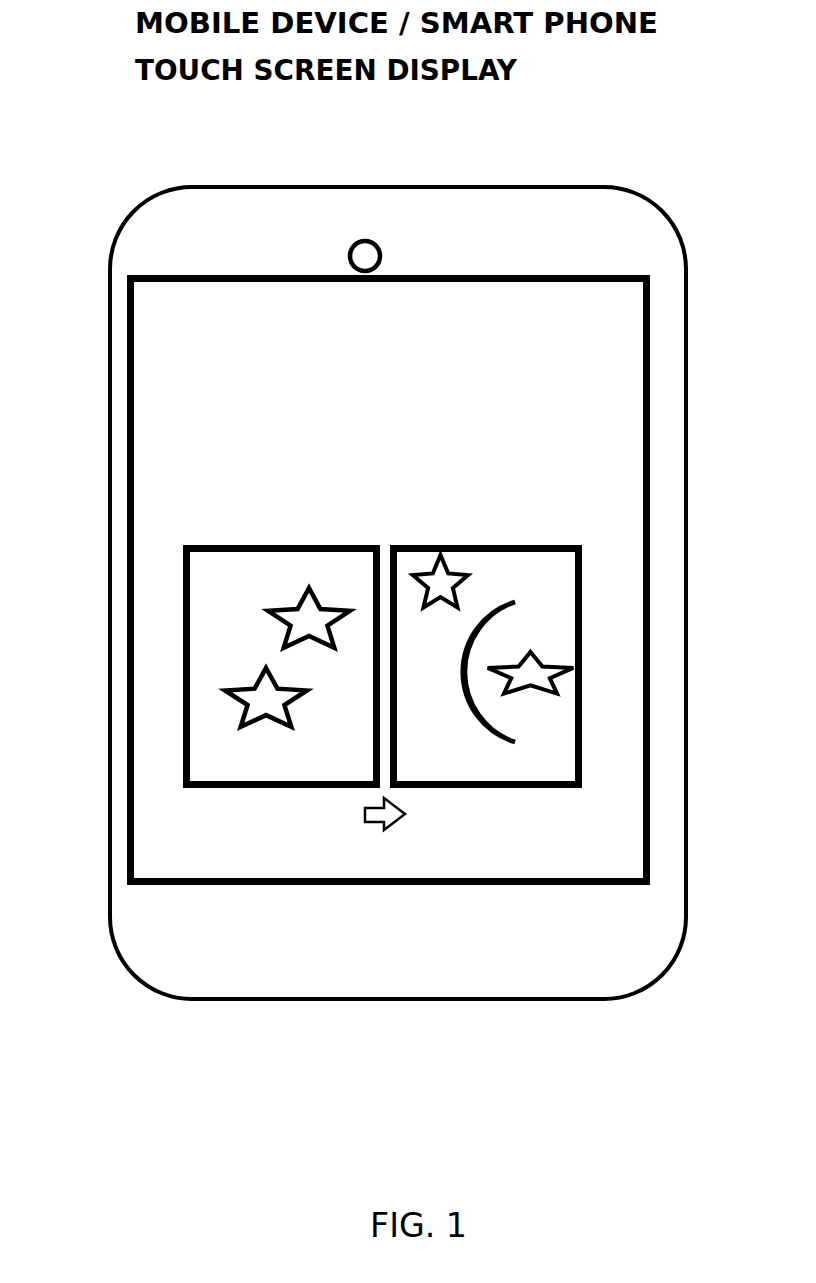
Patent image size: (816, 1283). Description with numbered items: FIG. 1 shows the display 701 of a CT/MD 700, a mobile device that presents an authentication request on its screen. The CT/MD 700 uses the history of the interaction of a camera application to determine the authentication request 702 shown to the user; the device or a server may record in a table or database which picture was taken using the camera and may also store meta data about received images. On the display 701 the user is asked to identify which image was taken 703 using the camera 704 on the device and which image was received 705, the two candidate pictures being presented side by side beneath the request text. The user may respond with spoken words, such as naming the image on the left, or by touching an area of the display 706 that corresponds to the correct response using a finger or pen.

The CT/MD 700 is at (105, 245).
The display 701 is at (140, 442).
The authentication request 702 is at (543, 447).
The image taken 703 is at (282, 713).
The camera 704 is at (367, 240).
The image received 705 is at (486, 711).
The area of the display 706 is at (385, 835).